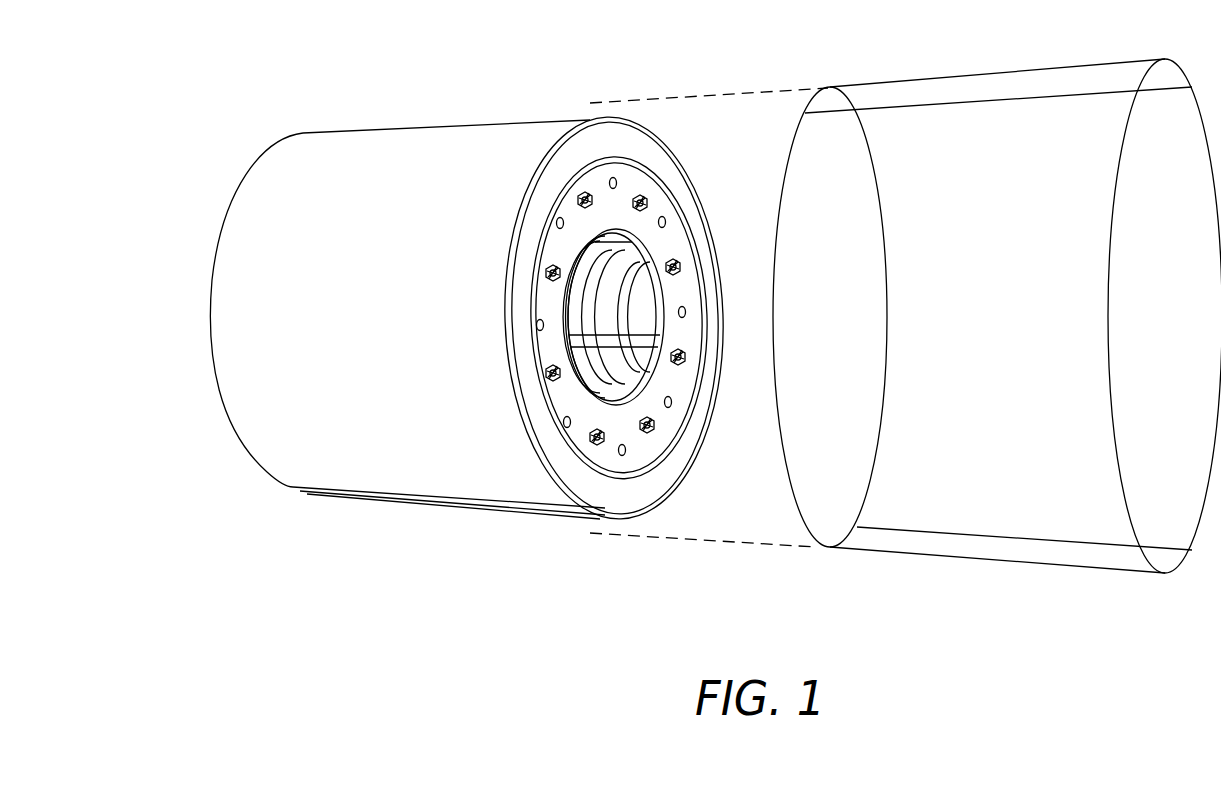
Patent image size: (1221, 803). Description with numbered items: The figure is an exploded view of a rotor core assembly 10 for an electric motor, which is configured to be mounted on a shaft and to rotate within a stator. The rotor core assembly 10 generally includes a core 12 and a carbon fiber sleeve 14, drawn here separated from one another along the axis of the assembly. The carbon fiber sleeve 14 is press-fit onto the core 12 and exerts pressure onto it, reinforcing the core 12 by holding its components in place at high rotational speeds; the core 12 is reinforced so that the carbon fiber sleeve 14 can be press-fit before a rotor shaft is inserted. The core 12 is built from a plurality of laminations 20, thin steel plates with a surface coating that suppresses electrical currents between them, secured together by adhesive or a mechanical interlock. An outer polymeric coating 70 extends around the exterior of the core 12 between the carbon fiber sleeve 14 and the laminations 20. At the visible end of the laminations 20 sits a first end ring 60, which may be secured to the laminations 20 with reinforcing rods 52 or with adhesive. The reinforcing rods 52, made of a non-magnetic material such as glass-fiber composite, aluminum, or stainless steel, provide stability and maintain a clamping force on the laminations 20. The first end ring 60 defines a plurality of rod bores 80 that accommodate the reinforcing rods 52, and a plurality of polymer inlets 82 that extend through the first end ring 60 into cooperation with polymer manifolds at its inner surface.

The rotor core assembly 10 is at (298, 104).
The core 12 is at (593, 375).
The carbon fiber sleeve 14 is at (1000, 73).
The laminations 20 is at (630, 377).
The reinforcing rods 52 is at (648, 424).
The first end ring 60 is at (592, 143).
The outer polymeric coating 70 is at (412, 157).
The rod bores 80 is at (583, 195).
The polymer inlets 82 is at (615, 187).